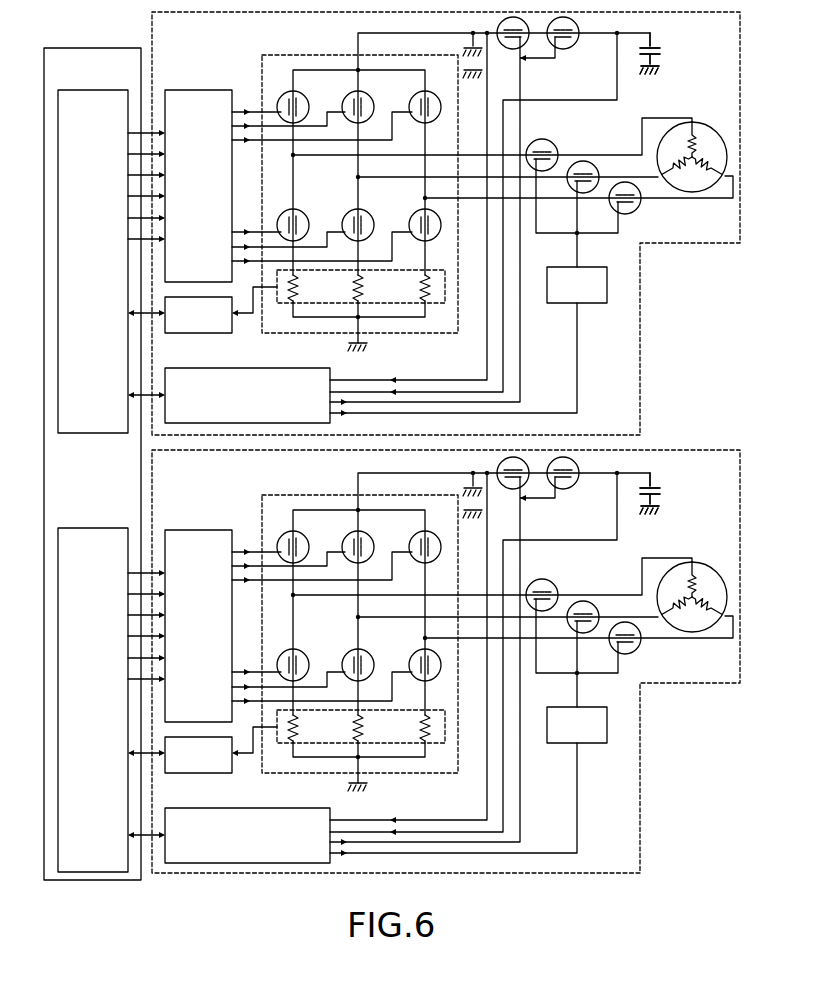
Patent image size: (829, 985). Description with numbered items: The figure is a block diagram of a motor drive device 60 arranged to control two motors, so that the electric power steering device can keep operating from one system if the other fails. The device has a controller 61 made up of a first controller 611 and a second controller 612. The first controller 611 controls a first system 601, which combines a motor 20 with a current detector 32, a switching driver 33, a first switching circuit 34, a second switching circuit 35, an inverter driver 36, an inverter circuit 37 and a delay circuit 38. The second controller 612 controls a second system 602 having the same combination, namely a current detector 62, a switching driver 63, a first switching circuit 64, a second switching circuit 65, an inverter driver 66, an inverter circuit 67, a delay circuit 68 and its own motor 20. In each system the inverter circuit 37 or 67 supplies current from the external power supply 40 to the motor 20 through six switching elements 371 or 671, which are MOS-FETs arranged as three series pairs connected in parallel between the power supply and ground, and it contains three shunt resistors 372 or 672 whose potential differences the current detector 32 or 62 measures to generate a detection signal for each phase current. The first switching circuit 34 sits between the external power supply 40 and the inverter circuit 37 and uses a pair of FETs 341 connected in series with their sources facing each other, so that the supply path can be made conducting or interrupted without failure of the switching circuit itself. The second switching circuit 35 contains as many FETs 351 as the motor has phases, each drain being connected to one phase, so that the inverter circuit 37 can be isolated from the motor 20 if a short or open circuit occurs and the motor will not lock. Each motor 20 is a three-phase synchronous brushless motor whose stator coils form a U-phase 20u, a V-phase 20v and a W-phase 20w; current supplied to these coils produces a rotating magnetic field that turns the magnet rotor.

The motor drive device 60 is at (72, 25).
The controller 61 is at (105, 48).
The first controller 611 is at (90, 90).
The second controller 612 is at (90, 528).
The first system 601 is at (642, 398).
The second system 602 is at (642, 838).
The inverter driver 36 is at (203, 90).
The inverter driver 66 is at (203, 530).
The inverter circuit 37 is at (297, 54).
The inverter circuit 67 is at (297, 494).
The switching element 371 is at (312, 86).
The switching element 671 is at (312, 526).
The shunt resistor 372 is at (431, 306).
The shunt resistor 672 is at (431, 746).
The current detector 32 is at (205, 334).
The current detector 62 is at (205, 774).
The switching driver 33 is at (292, 368).
The switching driver 63 is at (292, 808).
The first switching circuit 34 is at (577, 57).
The FET 341 is at (497, 32).
The first switching circuit 64 is at (577, 497).
The second switching circuit 35 is at (592, 147).
The FET 351 is at (545, 172).
The second switching circuit 65 is at (592, 587).
The delay circuit 38 is at (598, 267).
The delay circuit 68 is at (598, 707).
The external power supply 40 is at (656, 49).
The motor 20 is at (705, 121).
The U-phase 20u is at (684, 144).
The V-phase 20v is at (679, 171).
The W-phase 20w is at (711, 172).